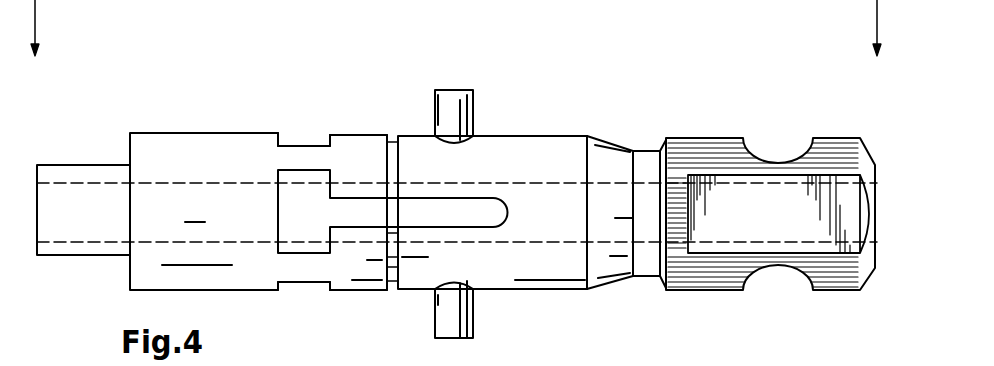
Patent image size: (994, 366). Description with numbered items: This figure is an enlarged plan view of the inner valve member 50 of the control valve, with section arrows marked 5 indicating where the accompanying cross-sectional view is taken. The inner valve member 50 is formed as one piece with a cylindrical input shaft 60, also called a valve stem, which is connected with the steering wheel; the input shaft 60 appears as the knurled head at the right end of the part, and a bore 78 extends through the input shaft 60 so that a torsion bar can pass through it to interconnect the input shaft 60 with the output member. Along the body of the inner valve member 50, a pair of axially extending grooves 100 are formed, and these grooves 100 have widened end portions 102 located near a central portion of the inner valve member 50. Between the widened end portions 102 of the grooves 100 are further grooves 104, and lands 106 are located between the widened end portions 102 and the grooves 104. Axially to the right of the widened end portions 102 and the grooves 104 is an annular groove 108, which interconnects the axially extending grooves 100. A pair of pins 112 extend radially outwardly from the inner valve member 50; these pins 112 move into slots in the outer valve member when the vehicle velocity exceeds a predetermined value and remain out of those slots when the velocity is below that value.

The section line 5- 5 is at (455, 42).
The inner valve member 50 is at (668, 102).
The input shaft 60 is at (722, 137).
The bore 78 is at (196, 183).
The axially extending grooves 100 is at (477, 210).
The widened end portions 102 is at (296, 203).
The grooves 104 is at (291, 332).
The lands 106 is at (347, 327).
The annular groove 108 is at (392, 148).
The pins 112 is at (458, 317).